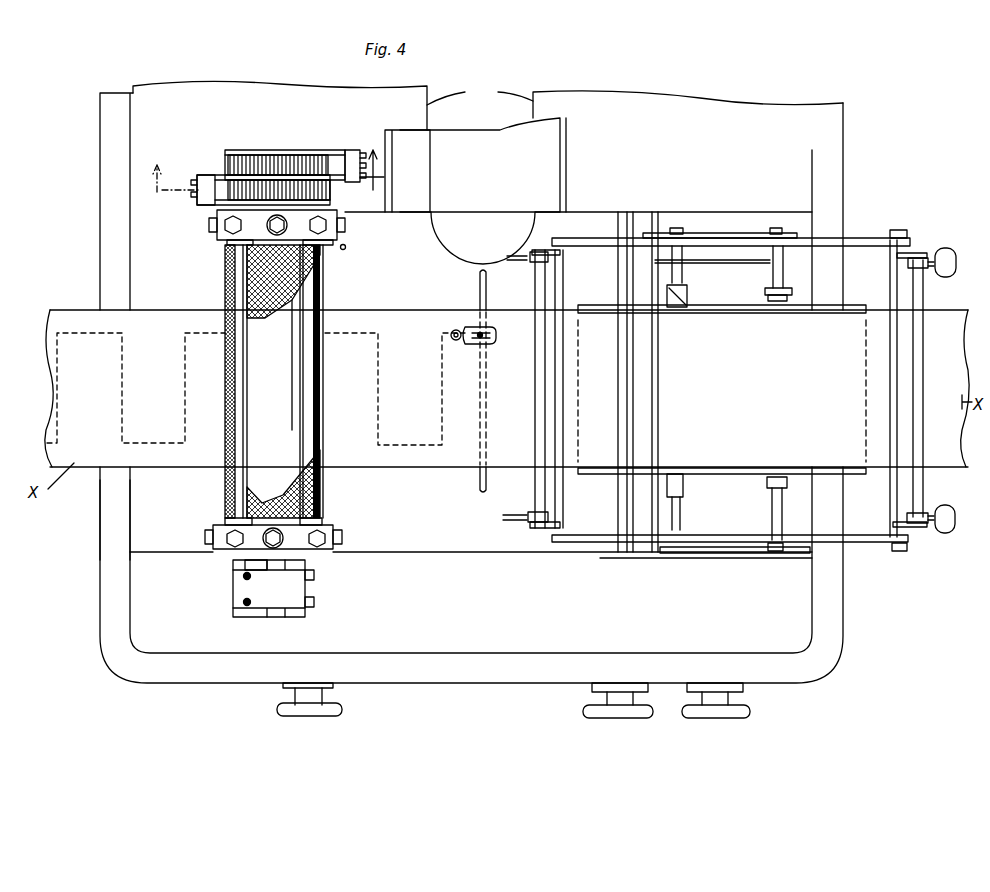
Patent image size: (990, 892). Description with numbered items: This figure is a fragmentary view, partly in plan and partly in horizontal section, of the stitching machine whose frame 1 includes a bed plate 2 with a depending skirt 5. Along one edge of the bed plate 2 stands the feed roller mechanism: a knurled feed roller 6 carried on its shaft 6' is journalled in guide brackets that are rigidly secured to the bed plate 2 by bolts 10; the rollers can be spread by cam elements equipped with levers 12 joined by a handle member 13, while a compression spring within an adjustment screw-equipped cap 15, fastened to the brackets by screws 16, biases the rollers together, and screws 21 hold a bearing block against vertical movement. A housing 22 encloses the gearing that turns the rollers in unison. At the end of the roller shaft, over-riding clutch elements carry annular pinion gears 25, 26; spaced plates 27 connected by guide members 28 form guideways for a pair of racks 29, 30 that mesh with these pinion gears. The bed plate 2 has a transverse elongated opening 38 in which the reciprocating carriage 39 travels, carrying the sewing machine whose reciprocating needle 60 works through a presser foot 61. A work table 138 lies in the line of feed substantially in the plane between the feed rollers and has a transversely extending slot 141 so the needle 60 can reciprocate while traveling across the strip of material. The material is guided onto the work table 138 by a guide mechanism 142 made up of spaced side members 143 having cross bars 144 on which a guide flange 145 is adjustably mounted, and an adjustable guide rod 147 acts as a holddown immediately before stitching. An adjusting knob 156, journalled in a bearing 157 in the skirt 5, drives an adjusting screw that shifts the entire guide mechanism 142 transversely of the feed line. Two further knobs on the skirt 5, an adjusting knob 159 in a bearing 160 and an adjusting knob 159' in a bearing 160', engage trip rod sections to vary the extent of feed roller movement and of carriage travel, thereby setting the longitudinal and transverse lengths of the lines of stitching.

The frame 1 is at (143, 692).
The bed plate 2 is at (623, 125).
The skirt 5 is at (99, 566).
The feed roller 6 is at (283, 381).
The shaft 6' is at (223, 569).
The bolts 10 is at (262, 183).
The levers 12 is at (232, 243).
The handle member 13 is at (234, 397).
The cap 15 is at (305, 247).
The screws 16 is at (232, 231).
The screws 21 is at (209, 227).
The housing 22 is at (291, 591).
The annular pinion gear 25 is at (300, 190).
The annular pinion gear 26 is at (283, 200).
The spaced plates 27 is at (262, 200).
The guide members 28 is at (347, 170).
The rack 29 is at (216, 188).
The rack 30 is at (336, 152).
The transverse elongated opening 38 is at (480, 94).
The reciprocating carriage 39 is at (486, 176).
The sewing needle 60 is at (496, 334).
The presser foot 61 is at (465, 343).
The work table 138 is at (588, 214).
The slot 141 is at (479, 289).
The guide mechanism 142 is at (840, 238).
The side members 143 is at (702, 237).
The cross bars 144 is at (768, 262).
The guide flange 145 is at (709, 307).
The adjustable guide rod 147 is at (538, 428).
The adjusting knob 156 is at (716, 716).
The bearing 157 is at (735, 689).
The adjusting knob 159 is at (309, 726).
The adjusting knob 159' is at (610, 727).
The bearing 160 is at (279, 703).
The bearing 160' is at (584, 701).